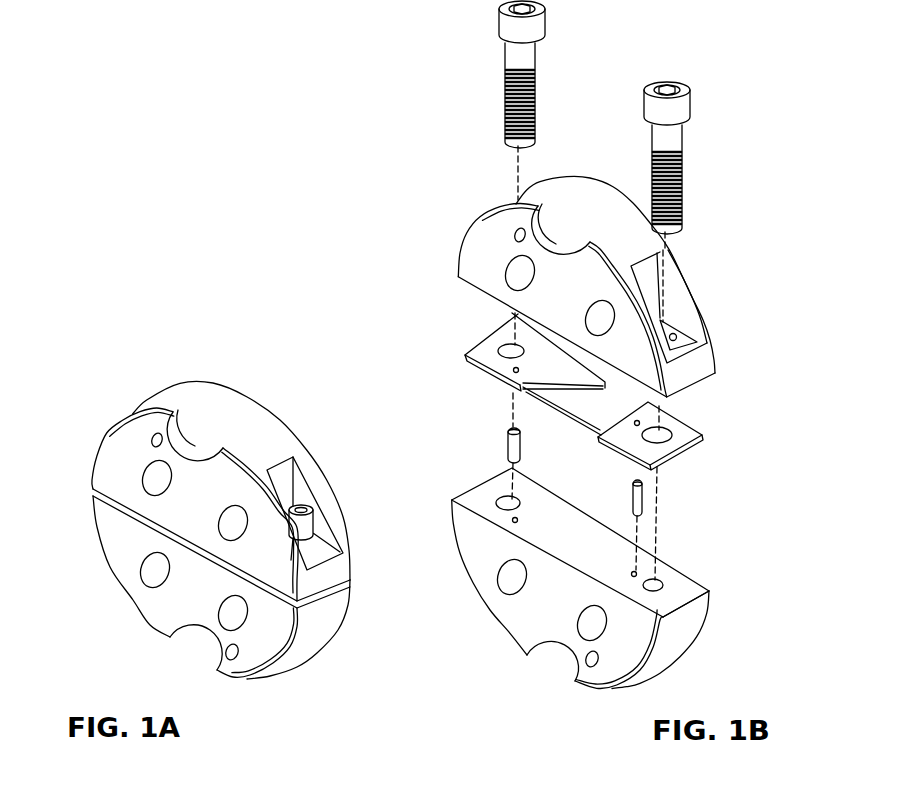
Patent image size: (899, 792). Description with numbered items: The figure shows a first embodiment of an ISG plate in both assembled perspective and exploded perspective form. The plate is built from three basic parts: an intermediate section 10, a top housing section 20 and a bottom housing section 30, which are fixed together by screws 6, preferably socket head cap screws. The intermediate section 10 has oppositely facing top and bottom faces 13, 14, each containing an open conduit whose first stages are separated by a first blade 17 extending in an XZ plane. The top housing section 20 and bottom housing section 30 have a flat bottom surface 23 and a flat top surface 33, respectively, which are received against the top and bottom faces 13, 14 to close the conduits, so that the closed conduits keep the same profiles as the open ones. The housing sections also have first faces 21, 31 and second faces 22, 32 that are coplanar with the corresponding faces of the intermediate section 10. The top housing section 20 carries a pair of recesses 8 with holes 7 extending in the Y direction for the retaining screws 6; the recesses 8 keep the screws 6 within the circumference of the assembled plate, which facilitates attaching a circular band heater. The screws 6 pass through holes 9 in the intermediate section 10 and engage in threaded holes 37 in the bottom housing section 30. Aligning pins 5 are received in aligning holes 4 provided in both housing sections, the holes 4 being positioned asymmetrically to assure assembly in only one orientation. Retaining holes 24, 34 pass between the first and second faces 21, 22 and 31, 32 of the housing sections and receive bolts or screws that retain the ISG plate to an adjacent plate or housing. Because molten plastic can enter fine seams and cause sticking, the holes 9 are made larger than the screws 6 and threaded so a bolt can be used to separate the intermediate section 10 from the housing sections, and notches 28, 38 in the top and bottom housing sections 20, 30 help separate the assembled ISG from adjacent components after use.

In FIG. 1B, the aligning holes 4 is at (636, 572).
In FIG. 1B, the aligning pins 5 is at (641, 496).
In FIG. 1B, the screws 6 is at (680, 141).
In FIG. 1B, the holes 7 is at (667, 337).
In FIG. 1B, the recesses 8 is at (687, 310).
In FIG. 1B, the holes 9 is at (666, 432).
In FIG. 1A, the intermediate section 10 is at (123, 513).
In FIG. 1B, the intermediate section 10 is at (712, 437).
In FIG. 1B, the top face 13 is at (482, 356).
In FIG. 1B, the bottom face 14 is at (470, 364).
In FIG. 1B, the first blade 17 is at (572, 416).
In FIG. 1A, the top housing section 20 is at (117, 440).
In FIG. 1B, the top housing section 20 is at (690, 262).
In FIG. 1A, the first face 21 is at (102, 465).
In FIG. 1B, the first face 21 is at (480, 233).
In FIG. 1A, the second face 22 is at (233, 390).
In FIG. 1B, the second face 22 is at (612, 184).
In FIG. 1B, the bottom surface 23 is at (480, 284).
In FIG. 1B, the retaining holes 24 is at (512, 272).
In FIG. 1A, the notches 28 is at (207, 440).
In FIG. 1A, the bottom housing section 30 is at (127, 587).
In FIG. 1B, the bottom housing section 30 is at (718, 625).
In FIG. 1A, the first face 31 is at (100, 513).
In FIG. 1B, the first face 31 is at (470, 543).
In FIG. 1A, the second face 32 is at (343, 618).
In FIG. 1B, the second face 32 is at (702, 582).
In FIG. 1B, the top surface 33 is at (472, 493).
In FIG. 1B, the retaining holes 34 is at (510, 583).
In FIG. 1B, the threaded holes 37 is at (662, 582).
In FIG. 1A, the notches 38 is at (182, 653).